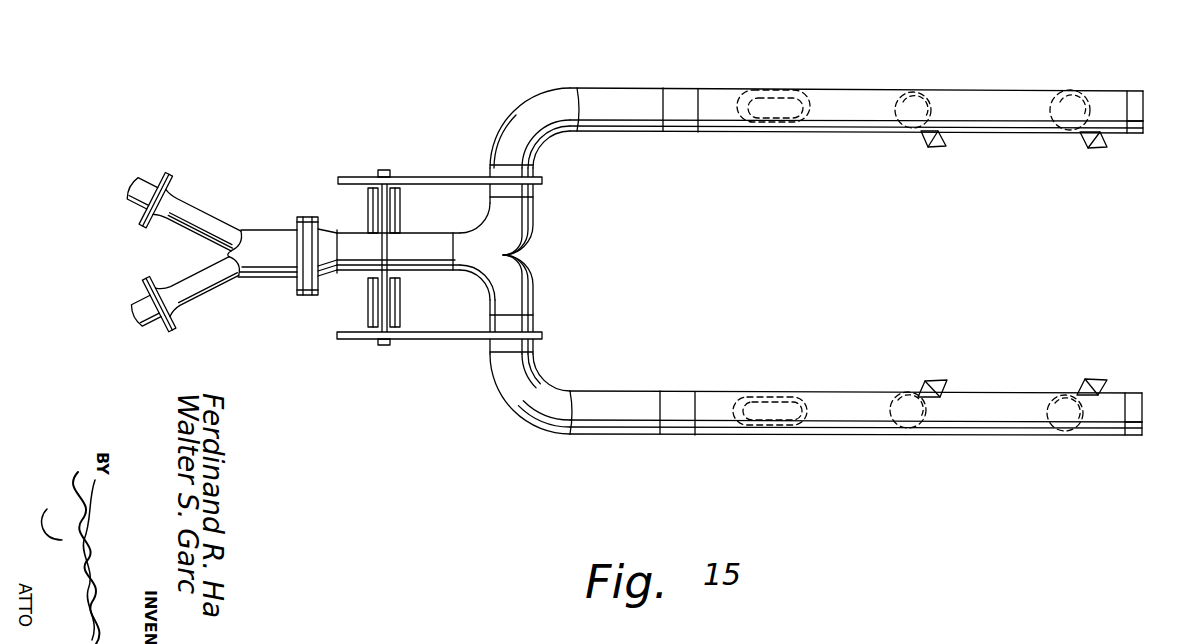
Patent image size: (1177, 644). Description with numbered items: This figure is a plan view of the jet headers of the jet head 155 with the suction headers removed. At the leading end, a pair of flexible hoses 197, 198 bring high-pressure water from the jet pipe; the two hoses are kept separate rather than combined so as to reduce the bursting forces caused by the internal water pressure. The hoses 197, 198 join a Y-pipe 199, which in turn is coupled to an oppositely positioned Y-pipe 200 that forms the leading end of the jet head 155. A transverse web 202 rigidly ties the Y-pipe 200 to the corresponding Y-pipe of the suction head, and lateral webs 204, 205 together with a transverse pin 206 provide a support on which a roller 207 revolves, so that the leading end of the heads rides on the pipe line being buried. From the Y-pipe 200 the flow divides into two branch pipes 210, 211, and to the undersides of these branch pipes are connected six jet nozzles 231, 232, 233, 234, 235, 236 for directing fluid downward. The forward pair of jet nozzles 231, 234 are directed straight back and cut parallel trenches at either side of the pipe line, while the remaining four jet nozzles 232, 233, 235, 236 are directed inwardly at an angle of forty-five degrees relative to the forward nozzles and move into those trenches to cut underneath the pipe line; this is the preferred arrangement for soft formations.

The jet head 155 is at (634, 440).
The flexible hose 197 is at (128, 297).
The flexible hose 198 is at (127, 197).
The Y-pipe 199 is at (260, 278).
The Y-pipe 200 is at (427, 233).
The transverse web 202 is at (382, 207).
The lateral web 204 is at (358, 341).
The lateral web 205 is at (352, 176).
The transverse pin 206 is at (384, 169).
The roller 207 is at (400, 290).
The branch pipe 210 is at (710, 391).
The branch pipe 211 is at (718, 134).
The jet nozzle 231 is at (807, 425).
The jet nozzle 232 is at (933, 383).
The jet nozzle 233 is at (1093, 380).
The jet nozzle 234 is at (805, 102).
The jet nozzle 235 is at (933, 147).
The jet nozzle 236 is at (1093, 150).